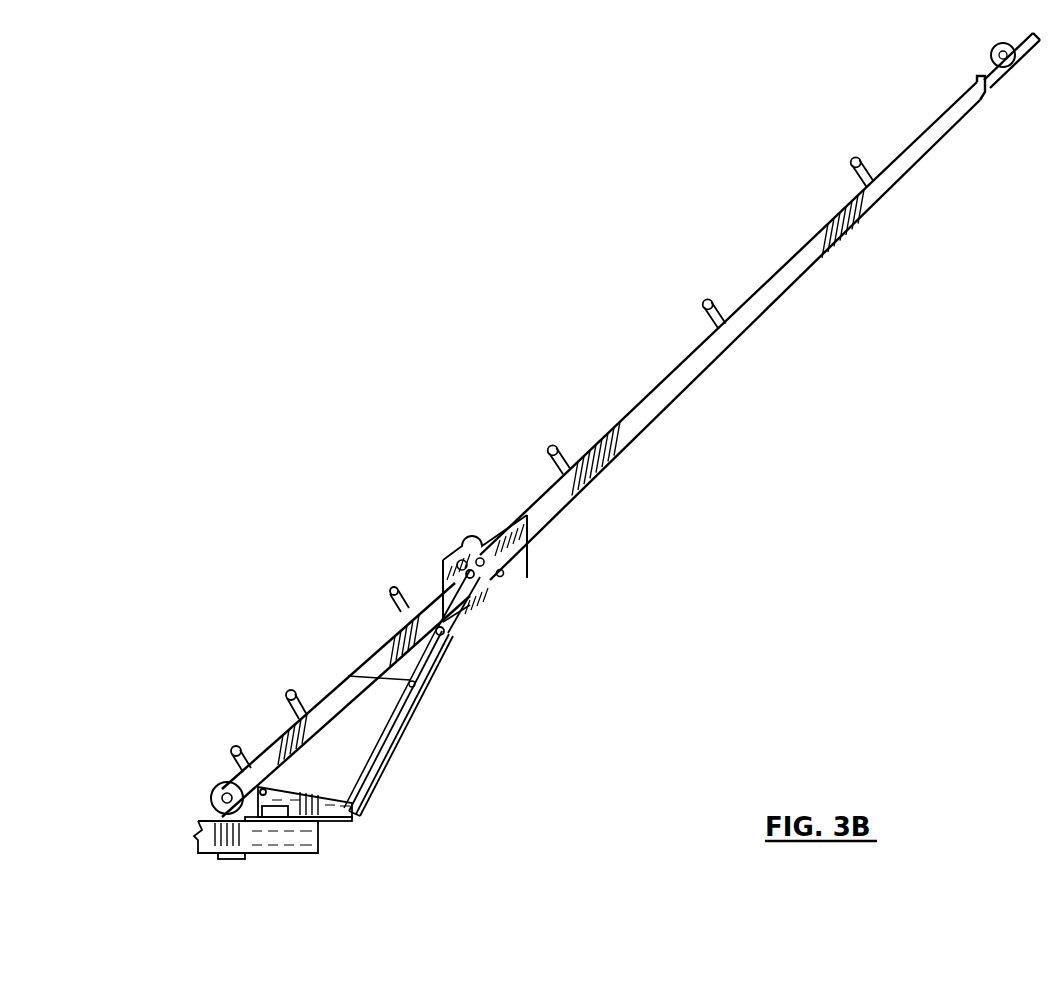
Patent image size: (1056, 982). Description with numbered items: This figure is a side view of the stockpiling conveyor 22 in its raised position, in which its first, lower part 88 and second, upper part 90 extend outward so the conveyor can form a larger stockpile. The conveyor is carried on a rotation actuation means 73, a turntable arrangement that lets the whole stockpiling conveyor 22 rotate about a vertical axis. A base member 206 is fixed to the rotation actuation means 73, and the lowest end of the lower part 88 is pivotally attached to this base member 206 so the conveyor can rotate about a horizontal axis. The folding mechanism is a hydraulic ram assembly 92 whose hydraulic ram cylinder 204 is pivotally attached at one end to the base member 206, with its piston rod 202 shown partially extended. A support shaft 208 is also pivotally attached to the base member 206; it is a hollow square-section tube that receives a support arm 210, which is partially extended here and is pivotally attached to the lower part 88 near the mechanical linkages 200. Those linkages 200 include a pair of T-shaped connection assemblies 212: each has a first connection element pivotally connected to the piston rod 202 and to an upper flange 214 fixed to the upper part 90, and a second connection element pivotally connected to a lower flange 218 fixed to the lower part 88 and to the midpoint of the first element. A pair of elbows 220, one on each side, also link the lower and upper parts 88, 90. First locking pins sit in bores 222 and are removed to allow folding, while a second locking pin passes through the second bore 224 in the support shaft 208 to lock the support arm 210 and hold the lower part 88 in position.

The stockpiling conveyor 22 is at (238, 562).
The rotation actuation means 73 is at (290, 840).
The lower part 88 is at (378, 655).
The upper part 90 is at (798, 283).
The hydraulic ram assembly 92 is at (454, 682).
The mechanical linkages 200 is at (450, 545).
The piston rod 202 is at (455, 640).
The hydraulic ram cylinder 204 is at (402, 735).
The base member 206 is at (330, 815).
The support shaft 208 is at (376, 743).
The support arm 210 is at (396, 620).
The T-shaped connection assembly 212 is at (480, 588).
The upper flange 214 is at (530, 538).
The lower flange 218 is at (441, 558).
The elbow 220 is at (478, 546).
The bore 222 is at (438, 566).
The second bore 224 is at (348, 676).